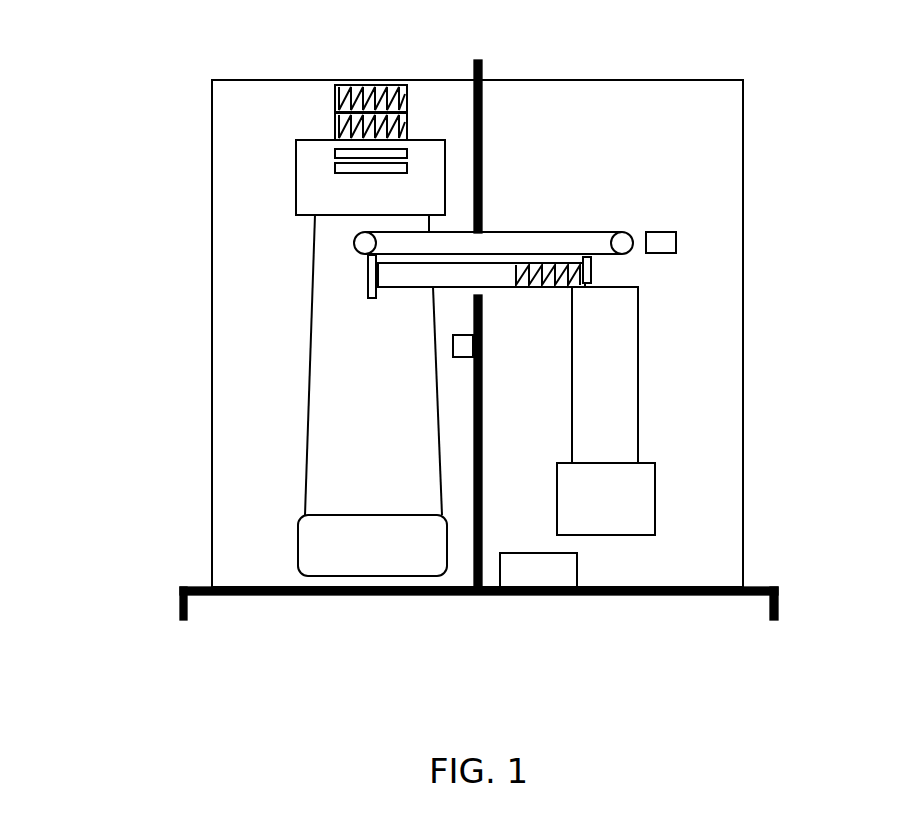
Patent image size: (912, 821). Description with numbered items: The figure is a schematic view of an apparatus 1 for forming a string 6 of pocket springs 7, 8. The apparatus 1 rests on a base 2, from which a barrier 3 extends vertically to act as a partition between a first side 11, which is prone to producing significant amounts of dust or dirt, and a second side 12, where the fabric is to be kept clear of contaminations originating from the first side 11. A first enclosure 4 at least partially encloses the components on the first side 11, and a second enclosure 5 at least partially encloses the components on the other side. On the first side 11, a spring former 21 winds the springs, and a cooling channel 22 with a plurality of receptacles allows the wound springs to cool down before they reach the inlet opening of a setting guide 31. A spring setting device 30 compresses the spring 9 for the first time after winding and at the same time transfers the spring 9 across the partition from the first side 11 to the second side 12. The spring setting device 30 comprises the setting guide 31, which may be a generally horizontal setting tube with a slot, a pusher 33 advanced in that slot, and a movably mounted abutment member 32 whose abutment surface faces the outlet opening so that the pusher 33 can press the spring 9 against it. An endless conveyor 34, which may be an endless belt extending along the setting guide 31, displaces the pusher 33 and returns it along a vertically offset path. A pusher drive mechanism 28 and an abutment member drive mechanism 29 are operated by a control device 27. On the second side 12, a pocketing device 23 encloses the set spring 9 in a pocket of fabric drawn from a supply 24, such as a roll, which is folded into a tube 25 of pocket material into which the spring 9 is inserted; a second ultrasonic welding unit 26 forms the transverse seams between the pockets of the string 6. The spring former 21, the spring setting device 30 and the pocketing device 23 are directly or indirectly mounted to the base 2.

The apparatus 1 is at (102, 175).
The base 2 is at (183, 585).
The barrier 3 is at (482, 190).
The first enclosure 4 is at (745, 463).
The second enclosure 5 is at (212, 457).
The string of pocket springs 6 is at (378, 78).
The pocket spring 7 is at (335, 128).
The pocket spring 8 is at (407, 97).
The spring 9 is at (545, 288).
The first side 11 is at (758, 78).
The second side 12 is at (210, 68).
The spring former 21 is at (656, 497).
The cooling channel 22 is at (640, 410).
The pocketing device 23 is at (288, 197).
The supply 24 is at (298, 545).
The tube 25 is at (305, 490).
The second ultrasonic welding unit 26 is at (355, 172).
The control device 27 is at (530, 553).
The pusher drive mechanism 28 is at (677, 243).
The abutment member drive mechanism 29 is at (460, 335).
The spring setting device 30 is at (623, 230).
The setting guide 31 is at (505, 288).
The abutment member 32 is at (368, 273).
The pusher 33 is at (592, 275).
The endless conveyor 34 is at (590, 232).